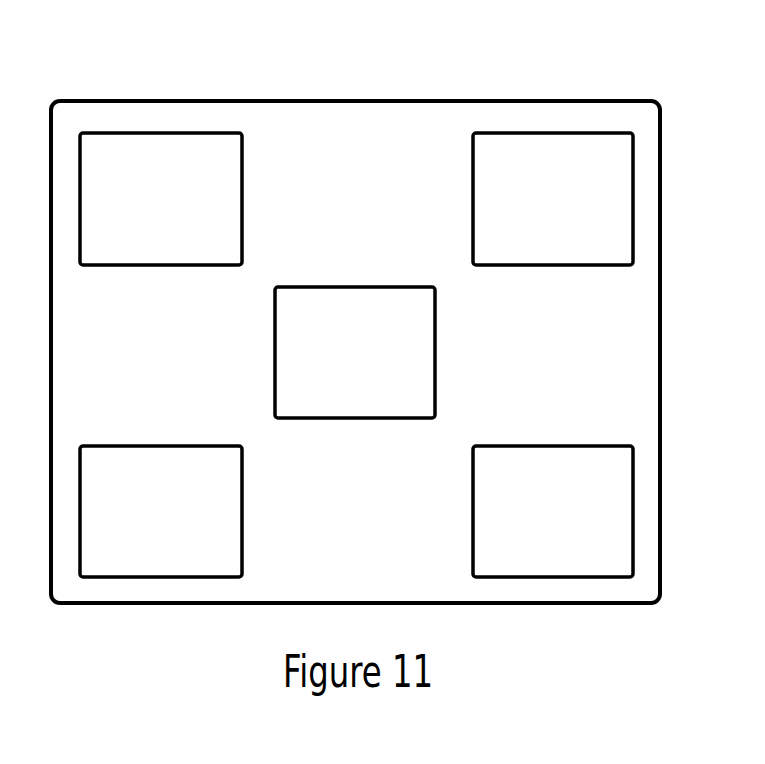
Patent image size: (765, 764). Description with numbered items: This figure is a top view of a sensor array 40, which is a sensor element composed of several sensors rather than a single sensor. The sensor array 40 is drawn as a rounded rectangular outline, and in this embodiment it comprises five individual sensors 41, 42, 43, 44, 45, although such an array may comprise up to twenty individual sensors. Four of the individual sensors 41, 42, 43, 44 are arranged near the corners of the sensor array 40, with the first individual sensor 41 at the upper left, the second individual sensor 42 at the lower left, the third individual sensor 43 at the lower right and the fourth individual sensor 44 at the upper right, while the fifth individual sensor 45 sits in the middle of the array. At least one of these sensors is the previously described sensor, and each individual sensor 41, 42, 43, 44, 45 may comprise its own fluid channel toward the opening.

The sensor array 40 is at (363, 101).
The individual sensor 41 is at (140, 265).
The individual sensor 42 is at (172, 446).
The individual sensor 43 is at (572, 446).
The individual sensor 44 is at (533, 265).
The individual sensor 45 is at (360, 287).